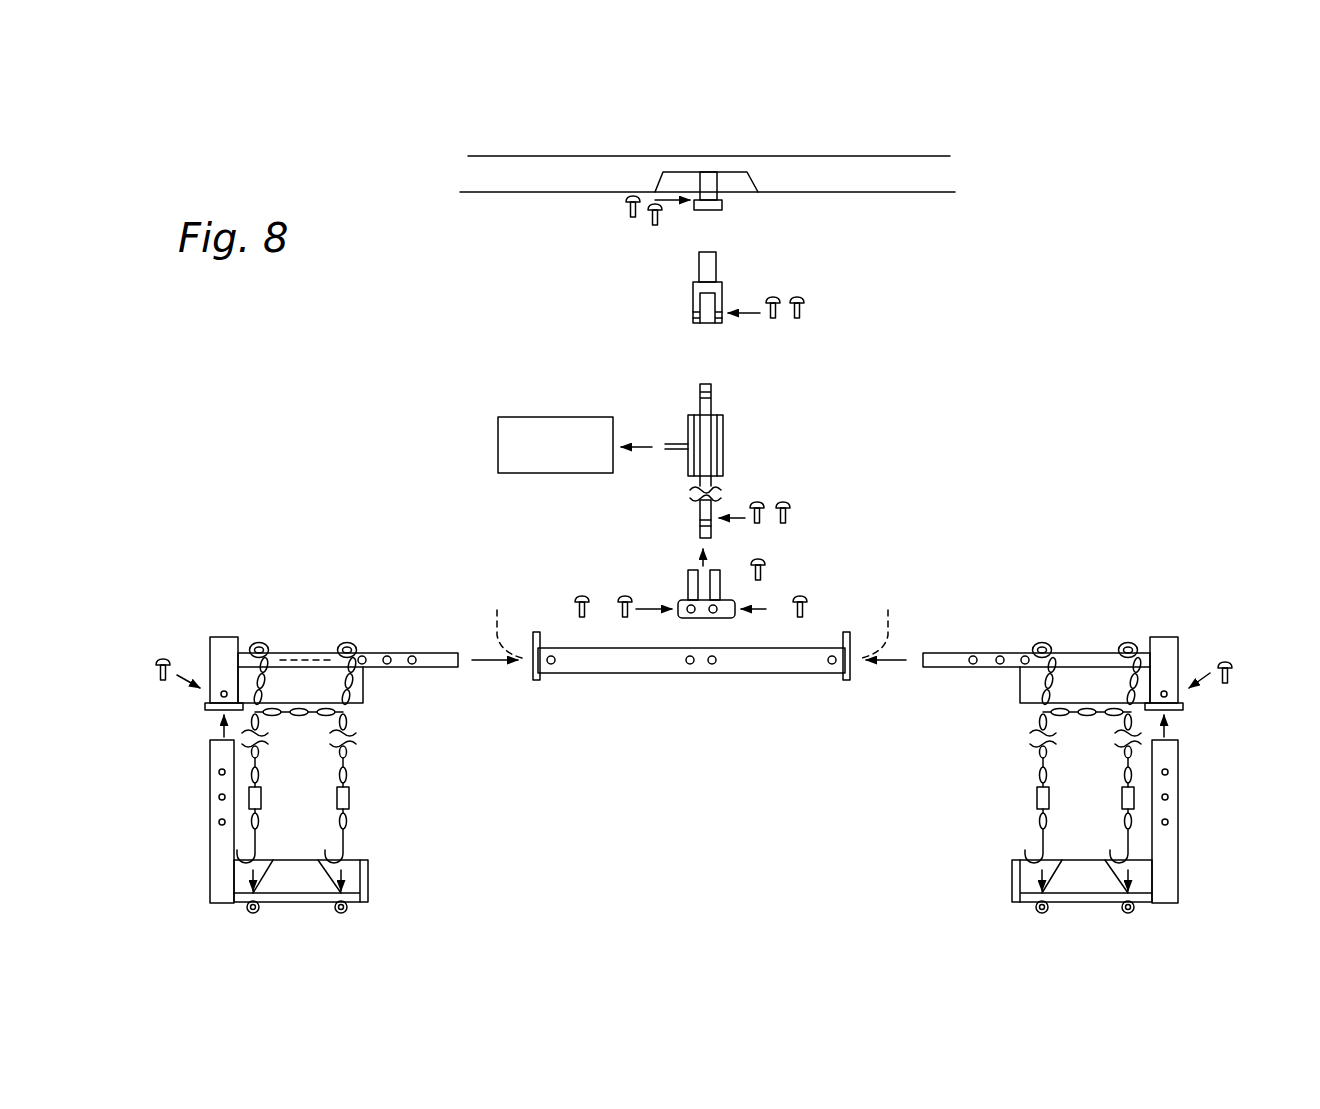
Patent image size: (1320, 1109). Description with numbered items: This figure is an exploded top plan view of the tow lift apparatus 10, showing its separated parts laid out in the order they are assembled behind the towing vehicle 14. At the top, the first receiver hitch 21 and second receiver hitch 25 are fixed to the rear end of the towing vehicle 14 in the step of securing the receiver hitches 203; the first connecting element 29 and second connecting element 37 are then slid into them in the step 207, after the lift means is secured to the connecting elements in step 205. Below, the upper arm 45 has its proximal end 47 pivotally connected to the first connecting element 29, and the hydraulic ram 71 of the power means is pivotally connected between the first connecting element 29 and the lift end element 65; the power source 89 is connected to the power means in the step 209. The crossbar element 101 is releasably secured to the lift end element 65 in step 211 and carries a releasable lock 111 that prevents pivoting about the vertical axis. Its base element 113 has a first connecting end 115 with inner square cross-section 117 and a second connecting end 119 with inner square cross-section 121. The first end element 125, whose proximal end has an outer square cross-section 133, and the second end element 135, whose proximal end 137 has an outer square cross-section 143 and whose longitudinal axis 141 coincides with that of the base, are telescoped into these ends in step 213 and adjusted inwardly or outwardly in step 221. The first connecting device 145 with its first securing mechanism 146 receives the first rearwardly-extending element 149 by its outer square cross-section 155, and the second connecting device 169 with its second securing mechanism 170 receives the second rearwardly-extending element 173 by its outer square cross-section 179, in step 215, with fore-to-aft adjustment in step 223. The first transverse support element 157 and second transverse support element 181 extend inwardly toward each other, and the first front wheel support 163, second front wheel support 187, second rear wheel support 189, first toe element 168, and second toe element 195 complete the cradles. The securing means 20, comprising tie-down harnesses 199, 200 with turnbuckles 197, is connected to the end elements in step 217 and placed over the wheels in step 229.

The tow lift apparatus 10 is at (955, 425).
The towing vehicle 14 is at (815, 171).
The securing means 20 is at (414, 800).
The first receiver hitch 21 is at (674, 232).
The second receiver hitch 25 is at (697, 220).
The first connecting element 29 is at (748, 287).
The second connecting element 37 is at (716, 267).
The upper arm 45 is at (742, 475).
The proximal end of upper arm 47 is at (712, 410).
The lift end element 65 is at (683, 601).
The hydraulic ram 71 is at (723, 447).
The power source 89 is at (498, 447).
The crossbar element 101 is at (744, 675).
The releasable lock 111 is at (728, 594).
The base element 113 is at (620, 675).
The first connecting end 115 is at (826, 644).
The inner square-shaped cross-section of first connecting end 117 is at (885, 622).
The second connecting end 119 is at (576, 628).
The inner square-shaped cross-section of second connecting end 121 is at (501, 622).
The first end element 125 is at (963, 667).
The outer square-shaped cross-section of first end element 133 is at (948, 653).
The second end element 135 is at (397, 653).
The proximal end of second end element 137 is at (452, 655).
The longitudinal axis of second end element 141 is at (333, 662).
The outer square-shaped cross-section of second end element 143 is at (440, 653).
The first connecting device 145 is at (1164, 637).
The first securing mechanism 146 is at (1222, 694).
The first rearwardly-extending element 149 is at (1178, 838).
The outer square-shaped cross-section of first rearwardly-extending element 155 is at (1178, 762).
The first transverse support element 157 is at (1088, 903).
The first front wheel support 163 is at (1024, 693).
The first toe element 168 is at (1010, 880).
The second connecting device 169 is at (223, 637).
The second securing mechanism 170 is at (196, 699).
The second rearwardly-extending element 173 is at (208, 838).
The outer square-shaped cross-section of second rearwardly-extending element 179 is at (208, 762).
The second transverse support element 181 is at (295, 903).
The second front wheel support 187 is at (363, 693).
The second rear wheel support 189 is at (348, 853).
The second toe element 195 is at (368, 877).
The turnbuckles 197 is at (336, 797).
The tie-down harness 199 is at (1039, 777).
The tie-down harness 200 is at (348, 755).
The securing receiver hitches step 203 is at (717, 173).
The securing lift means step 205 is at (707, 341).
The securing connecting elements step 207 is at (708, 221).
The connecting power means step 209 is at (641, 447).
The securing base element step 211 is at (703, 627).
The securing end elements step 213 is at (689, 679).
The securing rearwardly-extending elements step 215 is at (696, 727).
The connecting securing means step 217 is at (337, 631).
The adjusting end elements step 221 is at (893, 673).
The adjusting rearwardly-extending elements step 223 is at (220, 728).
The placing securing means step 229 is at (324, 866).